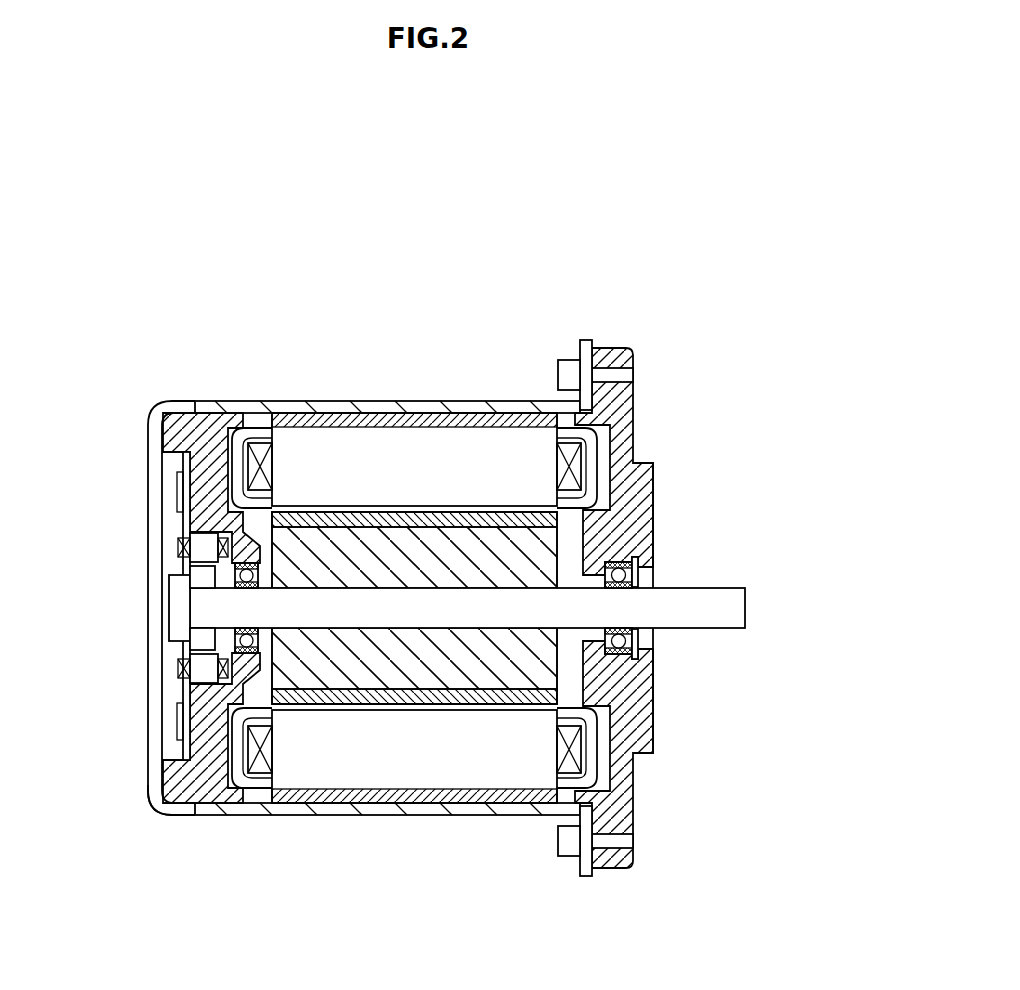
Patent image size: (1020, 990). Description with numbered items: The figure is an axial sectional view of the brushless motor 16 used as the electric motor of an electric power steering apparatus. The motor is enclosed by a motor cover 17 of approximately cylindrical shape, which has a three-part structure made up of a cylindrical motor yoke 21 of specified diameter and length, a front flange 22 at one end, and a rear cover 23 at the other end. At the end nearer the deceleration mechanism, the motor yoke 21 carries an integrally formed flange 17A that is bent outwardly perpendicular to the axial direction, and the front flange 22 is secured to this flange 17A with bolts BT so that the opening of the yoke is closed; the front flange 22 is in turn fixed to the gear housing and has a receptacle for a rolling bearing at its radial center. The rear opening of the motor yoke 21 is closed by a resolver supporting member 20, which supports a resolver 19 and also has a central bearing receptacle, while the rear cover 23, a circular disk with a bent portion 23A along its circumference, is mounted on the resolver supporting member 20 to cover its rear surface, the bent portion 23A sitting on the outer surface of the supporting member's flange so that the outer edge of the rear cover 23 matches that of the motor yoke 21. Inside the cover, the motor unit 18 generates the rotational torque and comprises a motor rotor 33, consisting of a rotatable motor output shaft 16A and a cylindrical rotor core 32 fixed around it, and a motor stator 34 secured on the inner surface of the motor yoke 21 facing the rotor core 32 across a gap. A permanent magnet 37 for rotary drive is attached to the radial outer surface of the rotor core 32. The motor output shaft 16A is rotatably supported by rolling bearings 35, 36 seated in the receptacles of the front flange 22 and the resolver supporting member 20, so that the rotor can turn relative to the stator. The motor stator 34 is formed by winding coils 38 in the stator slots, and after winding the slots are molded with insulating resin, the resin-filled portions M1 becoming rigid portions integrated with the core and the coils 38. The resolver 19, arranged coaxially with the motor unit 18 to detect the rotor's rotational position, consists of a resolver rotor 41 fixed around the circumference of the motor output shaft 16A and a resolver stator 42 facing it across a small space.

The brushless motor 16 is at (745, 253).
The motor output shaft 16A is at (665, 607).
The motor cover 17 is at (235, 238).
The flange 17A is at (581, 878).
The motor unit 18 is at (497, 760).
The resolver 19 is at (62, 642).
The resolver supporting member 20 is at (207, 490).
The motor yoke 21 is at (352, 401).
The front flange 22 is at (635, 408).
The rear cover 23 is at (148, 440).
The bent portion 23A is at (163, 814).
The rotor core 32 is at (505, 560).
The motor rotor 33 is at (802, 498).
The motor stator 34 is at (387, 763).
The rolling bearing 35 is at (623, 640).
The rolling bearing 36 is at (263, 640).
The permanent magnet 37 is at (447, 704).
The coil 38 is at (273, 470).
The resolver rotor 41 is at (203, 640).
The resolver stator 42 is at (203, 663).
The resin-filled portion M1 is at (605, 450).
The bolt BT is at (613, 843).